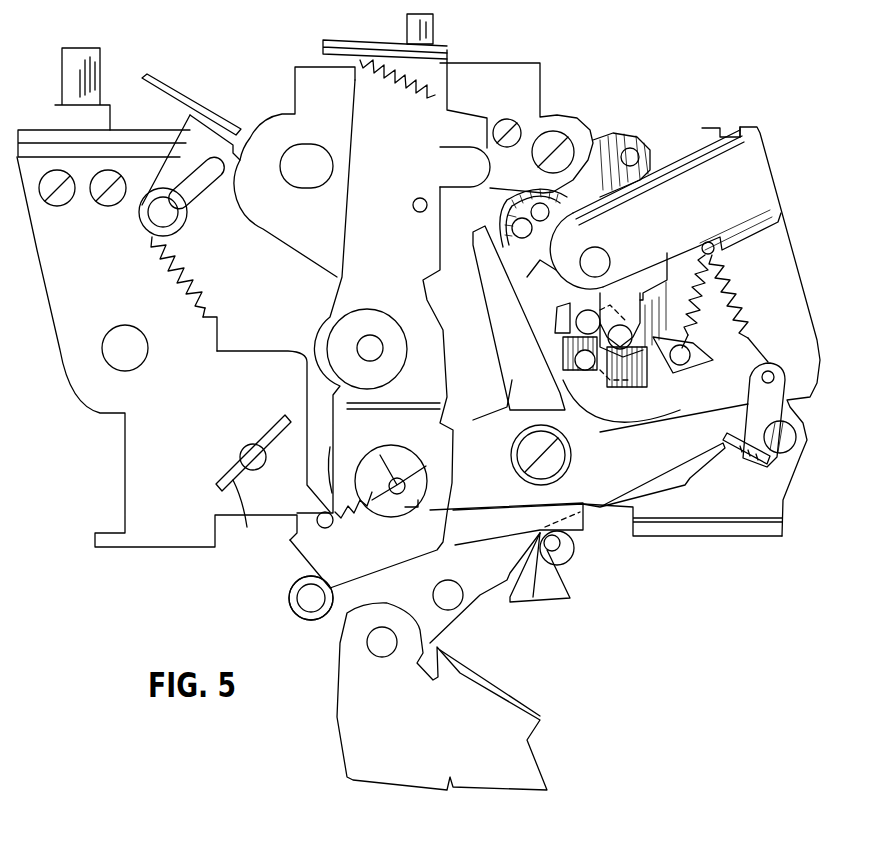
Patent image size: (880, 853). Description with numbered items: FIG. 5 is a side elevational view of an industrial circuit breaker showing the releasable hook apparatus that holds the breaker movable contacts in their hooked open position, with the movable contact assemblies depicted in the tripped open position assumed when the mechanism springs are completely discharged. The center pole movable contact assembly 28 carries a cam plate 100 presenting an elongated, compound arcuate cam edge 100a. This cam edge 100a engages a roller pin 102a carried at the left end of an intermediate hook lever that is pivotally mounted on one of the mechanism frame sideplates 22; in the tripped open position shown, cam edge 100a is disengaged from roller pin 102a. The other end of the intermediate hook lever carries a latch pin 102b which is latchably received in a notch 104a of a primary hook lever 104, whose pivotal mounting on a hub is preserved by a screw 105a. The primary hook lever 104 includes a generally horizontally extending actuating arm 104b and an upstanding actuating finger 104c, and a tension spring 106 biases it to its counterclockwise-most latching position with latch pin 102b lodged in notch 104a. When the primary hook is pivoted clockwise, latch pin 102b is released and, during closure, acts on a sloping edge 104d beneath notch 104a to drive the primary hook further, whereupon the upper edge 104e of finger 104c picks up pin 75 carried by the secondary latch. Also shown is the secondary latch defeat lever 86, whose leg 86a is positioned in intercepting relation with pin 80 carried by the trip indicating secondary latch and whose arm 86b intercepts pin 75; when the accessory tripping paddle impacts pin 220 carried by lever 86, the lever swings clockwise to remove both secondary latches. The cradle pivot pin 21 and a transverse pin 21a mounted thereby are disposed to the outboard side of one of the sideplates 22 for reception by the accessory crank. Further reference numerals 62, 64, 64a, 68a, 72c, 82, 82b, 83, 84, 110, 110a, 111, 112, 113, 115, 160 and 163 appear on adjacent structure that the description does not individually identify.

The pin 21 is at (250, 446).
The transverse pin 21a is at (239, 516).
The mechanism frame sideplates 22 is at (196, 424).
The center pole movable contact assembly 28 is at (368, 734).
The pivot 62 is at (600, 247).
The plate 64 is at (782, 271).
The plate lug 64a is at (610, 146).
The block 68a is at (572, 377).
The link end 72c is at (700, 372).
The pin 75 is at (528, 210).
The pin 80 is at (574, 321).
The lever 82 is at (672, 218).
The lever arm 82b is at (740, 180).
The pin 83 is at (680, 350).
The spring 84 is at (694, 276).
The secondary latch defeat lever 86 is at (652, 278).
The leg 86a is at (668, 370).
The arm 86b is at (522, 278).
The cam plate 100 is at (486, 562).
The cam edge 100a is at (477, 503).
The roller pin 102a is at (303, 612).
The latch pin 102b is at (565, 540).
The primary hook lever 104 is at (622, 474).
The notch 104a is at (547, 554).
The actuating arm 104b is at (703, 448).
The actuating finger 104c is at (482, 247).
The sloping edge 104d is at (573, 588).
The upper edge 104e is at (487, 233).
The screw 105a is at (515, 453).
The tension spring 106 is at (745, 310).
The bracket 110 is at (276, 292).
The slot 110a is at (207, 196).
The pivot boss 111 is at (368, 348).
The spring 112 is at (180, 287).
The pivot 113 is at (148, 230).
The spring 115 is at (358, 508).
The plate 160 is at (408, 244).
The pin 163 is at (455, 605).
The pin 220 is at (603, 385).